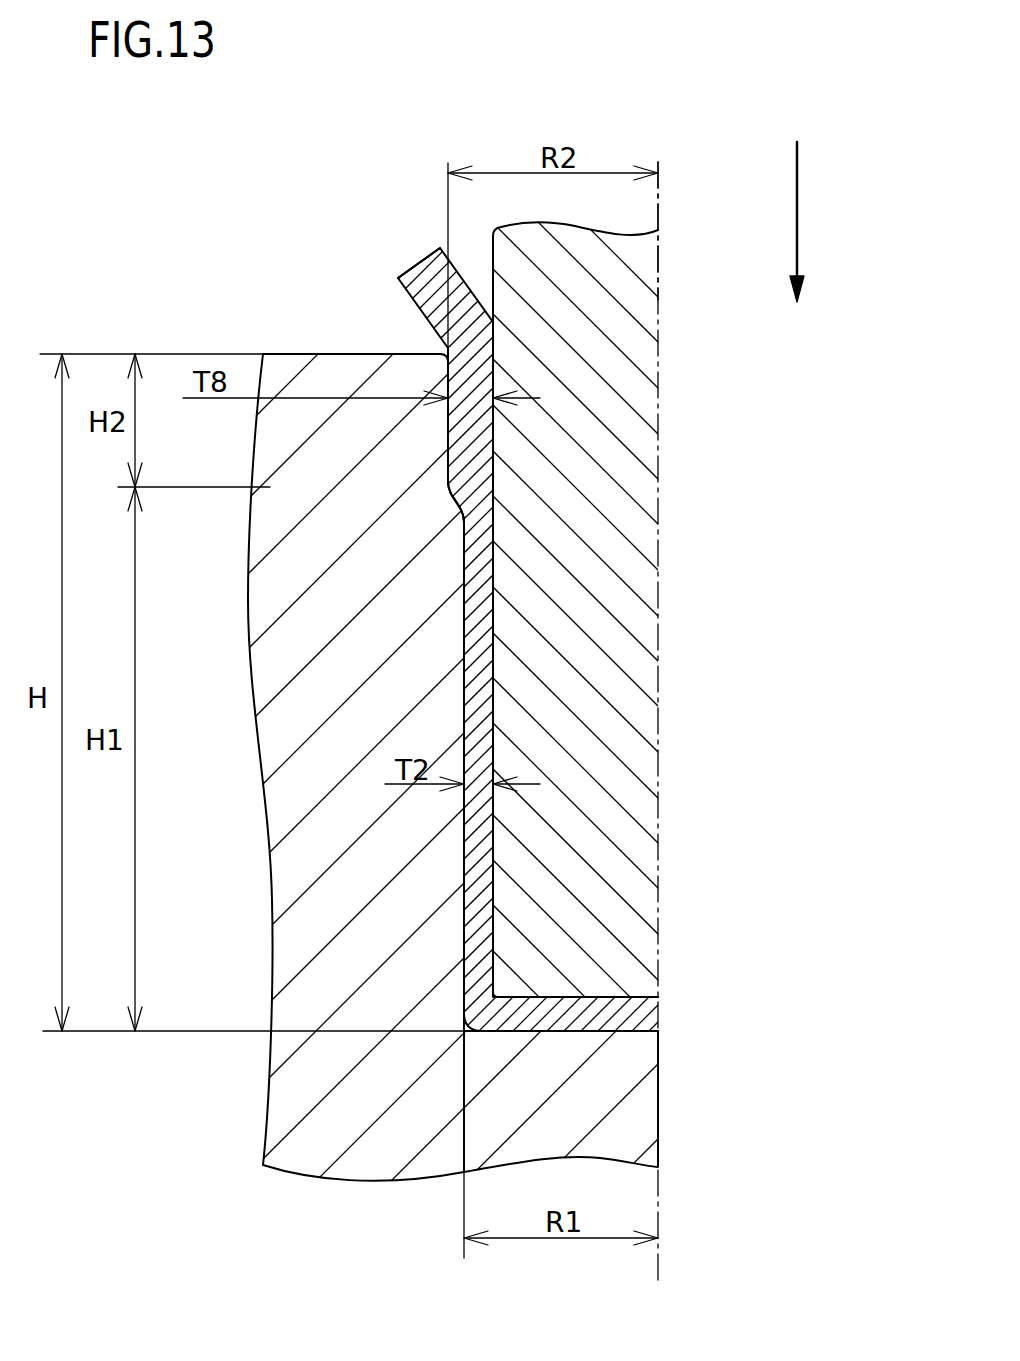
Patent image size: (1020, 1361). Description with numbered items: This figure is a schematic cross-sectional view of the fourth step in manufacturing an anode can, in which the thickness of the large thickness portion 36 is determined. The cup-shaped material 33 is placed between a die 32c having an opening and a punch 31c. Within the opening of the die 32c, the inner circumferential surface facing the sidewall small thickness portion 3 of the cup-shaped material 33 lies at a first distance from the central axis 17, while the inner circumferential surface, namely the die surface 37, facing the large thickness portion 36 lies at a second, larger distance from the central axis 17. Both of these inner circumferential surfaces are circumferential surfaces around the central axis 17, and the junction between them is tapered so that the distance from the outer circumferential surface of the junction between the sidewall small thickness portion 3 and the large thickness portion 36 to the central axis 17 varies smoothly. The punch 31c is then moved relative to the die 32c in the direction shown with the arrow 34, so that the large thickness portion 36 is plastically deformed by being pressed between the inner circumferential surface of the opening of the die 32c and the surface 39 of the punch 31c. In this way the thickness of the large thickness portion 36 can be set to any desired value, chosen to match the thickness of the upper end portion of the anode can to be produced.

The sidewall small thickness portion 3 is at (478, 712).
The central axis 17 is at (662, 200).
The punch 31c is at (612, 322).
The die 32c is at (330, 738).
The cup-shaped material 33 is at (430, 272).
The arrow 34 is at (800, 203).
The large thickness portion 36 is at (468, 372).
The die surface 37 is at (452, 430).
The surface of punch 39 is at (480, 622).